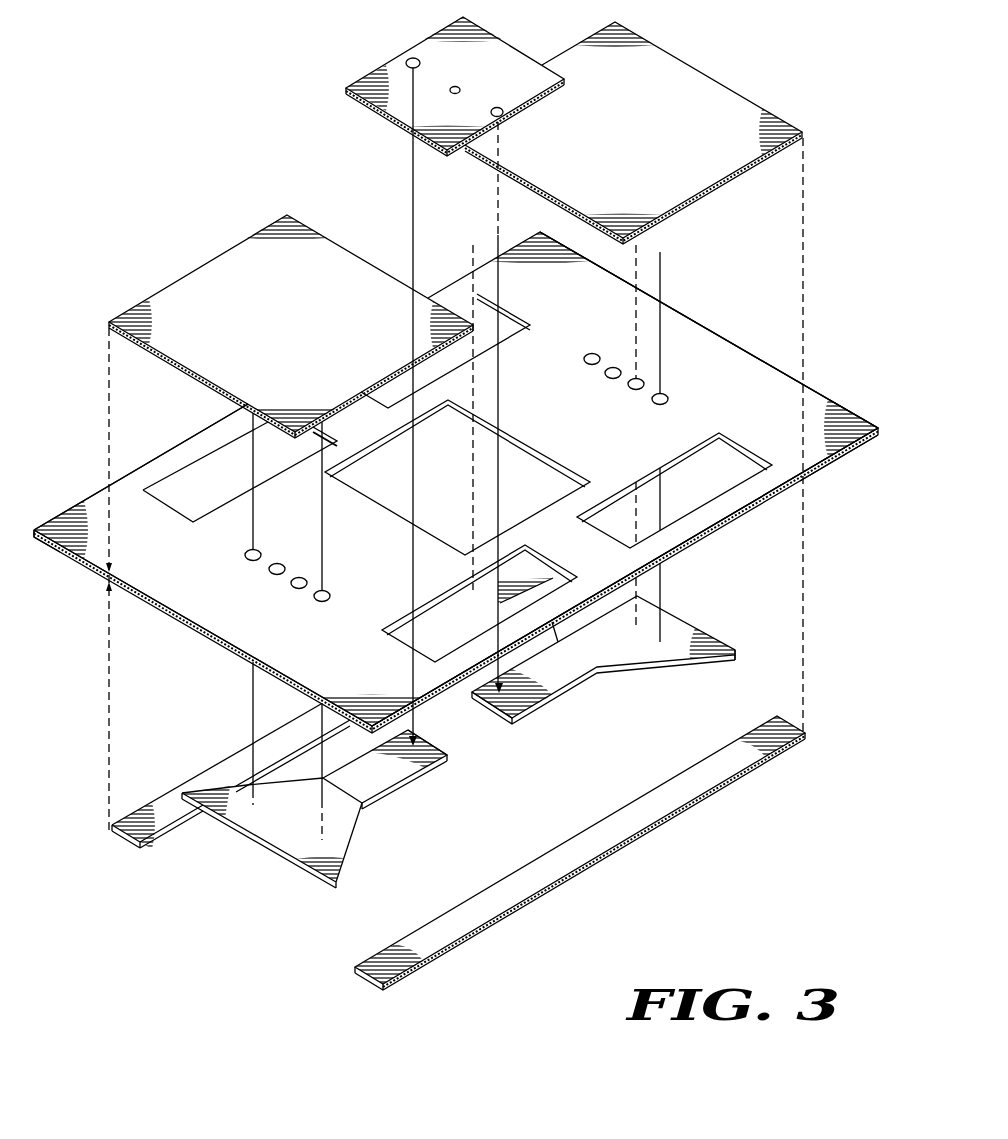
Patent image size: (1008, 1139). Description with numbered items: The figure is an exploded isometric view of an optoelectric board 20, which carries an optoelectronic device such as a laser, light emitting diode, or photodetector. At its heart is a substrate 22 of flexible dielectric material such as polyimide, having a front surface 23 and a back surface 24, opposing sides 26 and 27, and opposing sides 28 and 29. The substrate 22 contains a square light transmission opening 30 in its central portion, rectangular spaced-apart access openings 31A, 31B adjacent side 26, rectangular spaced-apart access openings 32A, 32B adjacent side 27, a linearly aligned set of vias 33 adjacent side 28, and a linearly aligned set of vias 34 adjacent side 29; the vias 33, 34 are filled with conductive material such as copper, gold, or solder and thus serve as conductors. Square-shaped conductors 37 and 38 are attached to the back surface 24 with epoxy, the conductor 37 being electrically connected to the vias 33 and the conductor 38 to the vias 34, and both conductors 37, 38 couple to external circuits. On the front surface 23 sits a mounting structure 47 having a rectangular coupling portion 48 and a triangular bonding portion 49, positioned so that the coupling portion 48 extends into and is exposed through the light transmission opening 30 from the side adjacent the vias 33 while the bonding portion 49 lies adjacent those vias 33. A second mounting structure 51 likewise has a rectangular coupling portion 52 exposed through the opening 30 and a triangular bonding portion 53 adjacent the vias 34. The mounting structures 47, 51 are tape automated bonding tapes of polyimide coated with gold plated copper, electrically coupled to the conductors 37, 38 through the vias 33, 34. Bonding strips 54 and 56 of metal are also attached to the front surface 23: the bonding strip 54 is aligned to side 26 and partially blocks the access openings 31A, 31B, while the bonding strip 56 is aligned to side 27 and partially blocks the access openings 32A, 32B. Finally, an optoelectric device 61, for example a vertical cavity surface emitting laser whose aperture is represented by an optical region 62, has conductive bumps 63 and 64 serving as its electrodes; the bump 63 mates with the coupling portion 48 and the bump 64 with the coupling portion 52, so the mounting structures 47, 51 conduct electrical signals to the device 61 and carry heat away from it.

The optoelectric board 20 is at (724, 953).
The substrate 22 is at (396, 575).
The front surface 23 is at (723, 529).
The back surface 24 is at (719, 332).
The side 26 is at (827, 462).
The side 27 is at (102, 489).
The side 28 is at (98, 569).
The side 29 is at (824, 395).
The light transmission opening 30 is at (566, 470).
The access opening 31A is at (386, 638).
The access opening 31B is at (757, 455).
The access opening 32A is at (160, 503).
The access opening 32B is at (527, 320).
The vias 33 is at (248, 559).
The vias 34 is at (606, 375).
The conductor 37 is at (307, 338).
The conductor 38 is at (634, 143).
The mounting structure 47 is at (368, 806).
The coupling portion 48 is at (456, 768).
The bonding portion 49 is at (346, 899).
The mounting structure 51 is at (590, 672).
The coupling portion 52 is at (524, 730).
The bonding portion 53 is at (731, 666).
The bonding strip 54 is at (594, 864).
The bonding strip 56 is at (217, 763).
The optoelectric device 61 is at (397, 122).
The optical region 62 is at (455, 94).
The conductive bump 63 is at (410, 58).
The conductive bump 64 is at (498, 107).